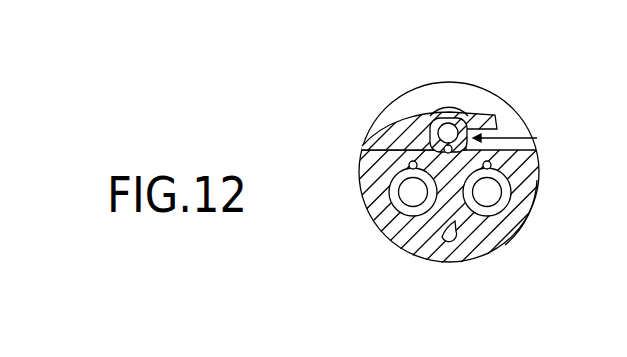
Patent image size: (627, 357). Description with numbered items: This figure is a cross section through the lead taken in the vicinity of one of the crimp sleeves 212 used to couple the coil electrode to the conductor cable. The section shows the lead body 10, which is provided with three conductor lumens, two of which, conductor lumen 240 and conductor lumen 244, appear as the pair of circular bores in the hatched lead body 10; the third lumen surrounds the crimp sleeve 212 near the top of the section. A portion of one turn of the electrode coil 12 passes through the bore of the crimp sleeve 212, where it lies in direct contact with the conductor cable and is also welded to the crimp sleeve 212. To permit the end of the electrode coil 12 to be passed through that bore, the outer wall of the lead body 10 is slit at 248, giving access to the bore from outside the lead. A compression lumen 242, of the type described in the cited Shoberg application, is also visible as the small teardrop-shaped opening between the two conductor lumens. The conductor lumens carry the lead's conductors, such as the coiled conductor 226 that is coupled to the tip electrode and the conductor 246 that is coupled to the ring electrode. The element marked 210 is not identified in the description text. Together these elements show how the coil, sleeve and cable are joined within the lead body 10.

The lead body 10 is at (539, 177).
The electrode coil 12 is at (363, 143).
The base plate 210 is at (359, 182).
The crimp sleeve 212 is at (537, 138).
The coiled conductor 226 is at (390, 196).
The conductor lumen 240 is at (402, 216).
The compression lumen 242 is at (450, 237).
The conductor lumen 244 is at (524, 222).
The conductor 246 is at (484, 214).
The slit 248 is at (473, 97).